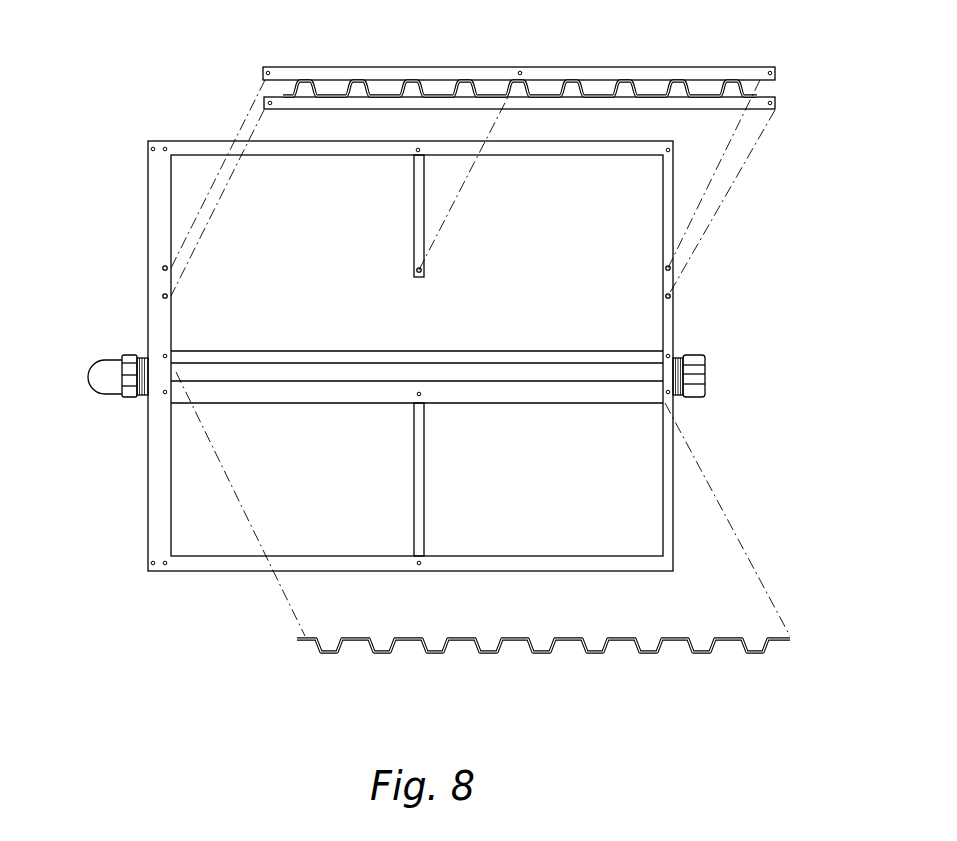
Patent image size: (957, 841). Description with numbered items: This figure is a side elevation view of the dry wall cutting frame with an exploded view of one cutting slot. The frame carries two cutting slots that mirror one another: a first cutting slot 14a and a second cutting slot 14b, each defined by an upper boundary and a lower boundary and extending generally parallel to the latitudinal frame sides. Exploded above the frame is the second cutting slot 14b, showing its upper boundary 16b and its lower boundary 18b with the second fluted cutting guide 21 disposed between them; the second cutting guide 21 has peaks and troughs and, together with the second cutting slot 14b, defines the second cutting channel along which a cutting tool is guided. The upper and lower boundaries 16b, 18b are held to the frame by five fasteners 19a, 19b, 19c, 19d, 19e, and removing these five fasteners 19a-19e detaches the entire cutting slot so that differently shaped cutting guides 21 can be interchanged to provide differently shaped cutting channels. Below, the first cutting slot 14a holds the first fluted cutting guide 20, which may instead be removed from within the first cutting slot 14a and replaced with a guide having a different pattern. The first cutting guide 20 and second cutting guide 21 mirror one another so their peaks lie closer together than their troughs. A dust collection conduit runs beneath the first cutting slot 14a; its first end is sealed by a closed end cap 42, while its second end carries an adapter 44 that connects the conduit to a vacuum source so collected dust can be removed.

The first cutting slot 14a is at (547, 372).
The second cutting slot 14b is at (750, 86).
The upper boundary 16b is at (715, 110).
The lower boundary 18b is at (690, 67).
The fastener 19a is at (164, 268).
The fastener 19b is at (164, 296).
The fastener 19c is at (421, 270).
The fastener 19d is at (670, 268).
The fastener 19e is at (670, 296).
The first fluted cutting guide 20 is at (388, 653).
The second fluted cutting guide 21 is at (291, 92).
The closed end cap 42 is at (705, 385).
The adapter 44 is at (105, 395).